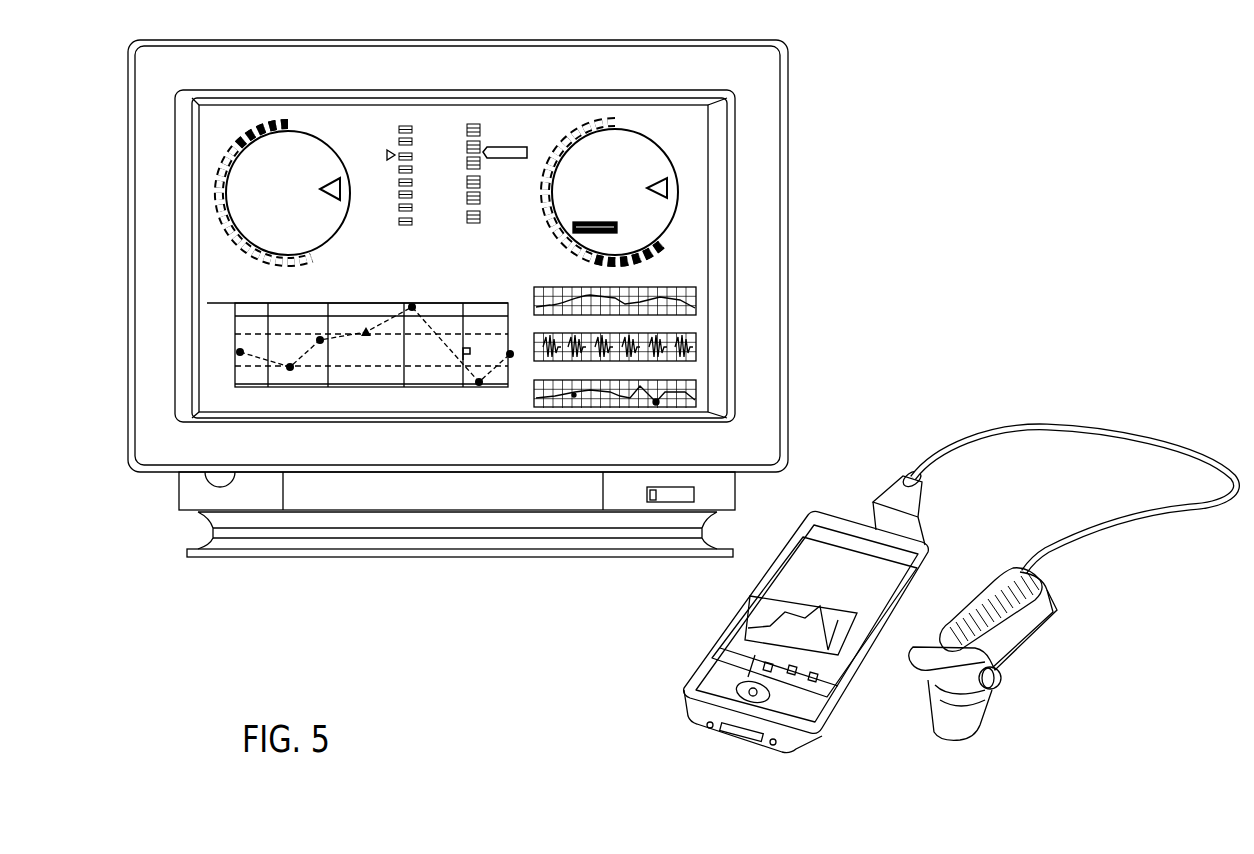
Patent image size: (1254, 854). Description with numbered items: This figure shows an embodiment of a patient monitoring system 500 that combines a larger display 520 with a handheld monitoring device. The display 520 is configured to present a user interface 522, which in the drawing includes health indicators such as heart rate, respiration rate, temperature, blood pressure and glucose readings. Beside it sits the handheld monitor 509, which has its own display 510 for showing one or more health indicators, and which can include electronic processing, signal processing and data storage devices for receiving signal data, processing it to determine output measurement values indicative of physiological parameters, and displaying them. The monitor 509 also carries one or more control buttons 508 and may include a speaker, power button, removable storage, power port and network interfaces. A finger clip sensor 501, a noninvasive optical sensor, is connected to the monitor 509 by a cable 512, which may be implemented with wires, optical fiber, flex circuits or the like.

The patient monitoring system 500 is at (1140, 110).
The display 520 is at (788, 108).
The user interface 522 is at (672, 262).
The control buttons 508 is at (708, 668).
The monitor 509 is at (843, 518).
The display 510 is at (803, 556).
The cable 512 is at (985, 438).
The finger clip sensor 501 is at (1025, 668).